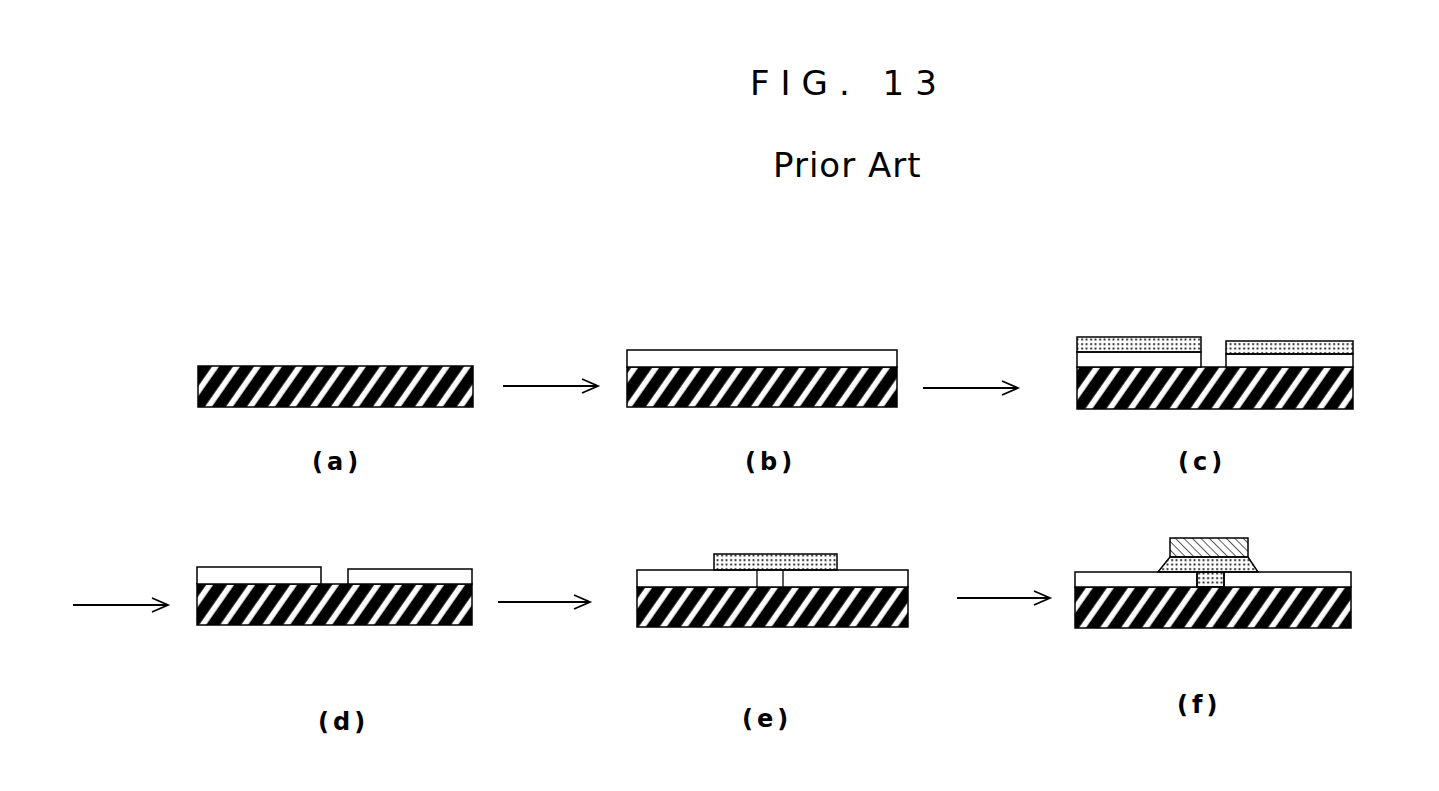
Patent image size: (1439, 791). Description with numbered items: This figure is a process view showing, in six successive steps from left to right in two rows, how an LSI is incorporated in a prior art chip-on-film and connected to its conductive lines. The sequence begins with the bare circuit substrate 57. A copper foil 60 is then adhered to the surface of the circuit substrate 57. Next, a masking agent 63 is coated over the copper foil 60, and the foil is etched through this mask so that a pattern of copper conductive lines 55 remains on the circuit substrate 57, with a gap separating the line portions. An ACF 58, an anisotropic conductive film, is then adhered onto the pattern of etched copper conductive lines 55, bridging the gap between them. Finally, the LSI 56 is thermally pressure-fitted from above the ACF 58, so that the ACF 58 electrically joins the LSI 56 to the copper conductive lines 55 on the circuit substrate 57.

The circuit substrate 57 is at (430, 364).
The copper foil 60 is at (833, 358).
The masking agent 63 is at (1288, 346).
The copper conductive lines 55 is at (411, 576).
The ACF (Anisotropic Conductive Film) 58 is at (775, 553).
The LSI (IC) 56 is at (1211, 538).